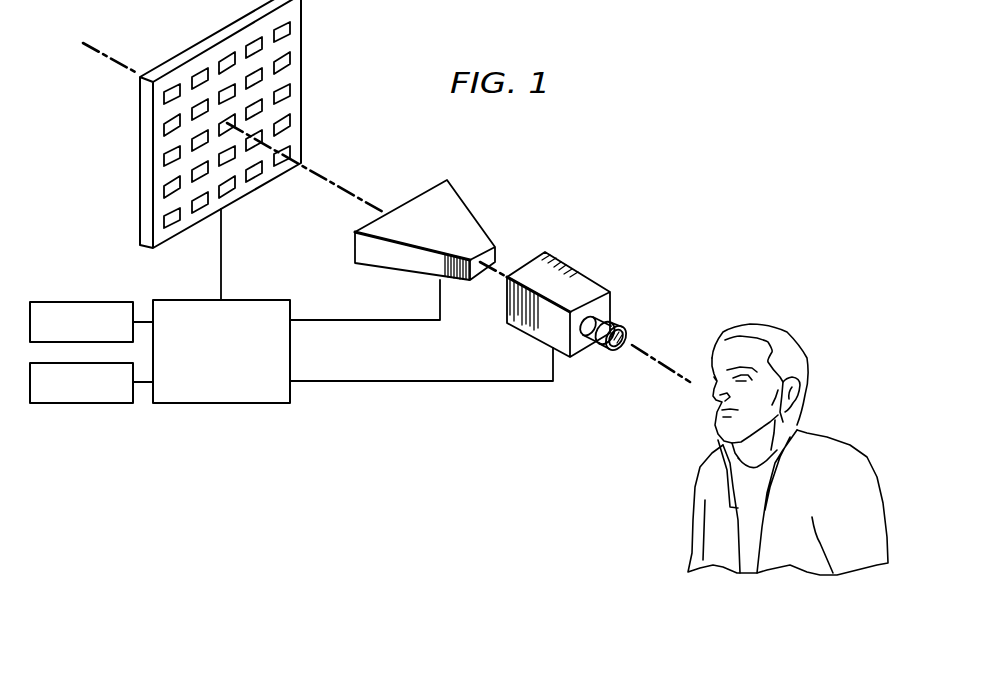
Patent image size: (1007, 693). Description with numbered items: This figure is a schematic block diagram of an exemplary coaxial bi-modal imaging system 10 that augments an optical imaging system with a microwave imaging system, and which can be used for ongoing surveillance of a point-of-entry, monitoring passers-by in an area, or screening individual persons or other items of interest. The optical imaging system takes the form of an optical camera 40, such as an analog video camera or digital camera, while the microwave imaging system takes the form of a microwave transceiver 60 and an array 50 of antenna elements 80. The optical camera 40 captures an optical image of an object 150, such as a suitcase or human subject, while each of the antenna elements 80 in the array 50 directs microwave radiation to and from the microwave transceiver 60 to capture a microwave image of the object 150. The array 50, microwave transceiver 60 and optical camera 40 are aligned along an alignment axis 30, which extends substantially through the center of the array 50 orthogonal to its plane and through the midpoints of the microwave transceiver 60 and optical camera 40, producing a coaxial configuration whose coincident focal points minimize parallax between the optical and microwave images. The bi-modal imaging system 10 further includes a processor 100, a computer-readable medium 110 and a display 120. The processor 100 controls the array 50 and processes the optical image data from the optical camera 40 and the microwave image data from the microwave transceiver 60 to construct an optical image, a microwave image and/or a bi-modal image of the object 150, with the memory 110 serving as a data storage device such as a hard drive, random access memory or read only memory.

The coaxial bi-modal imaging system 10 is at (630, 160).
The alignment axis 30 is at (660, 360).
The optical camera 40 is at (582, 282).
The array 50 is at (212, 124).
The microwave transceiver 60 is at (467, 217).
The antenna elements 80 is at (283, 62).
The processor 100 is at (203, 385).
The computer-readable medium 110 is at (82, 300).
The display 120 is at (82, 403).
The object 150 is at (770, 325).